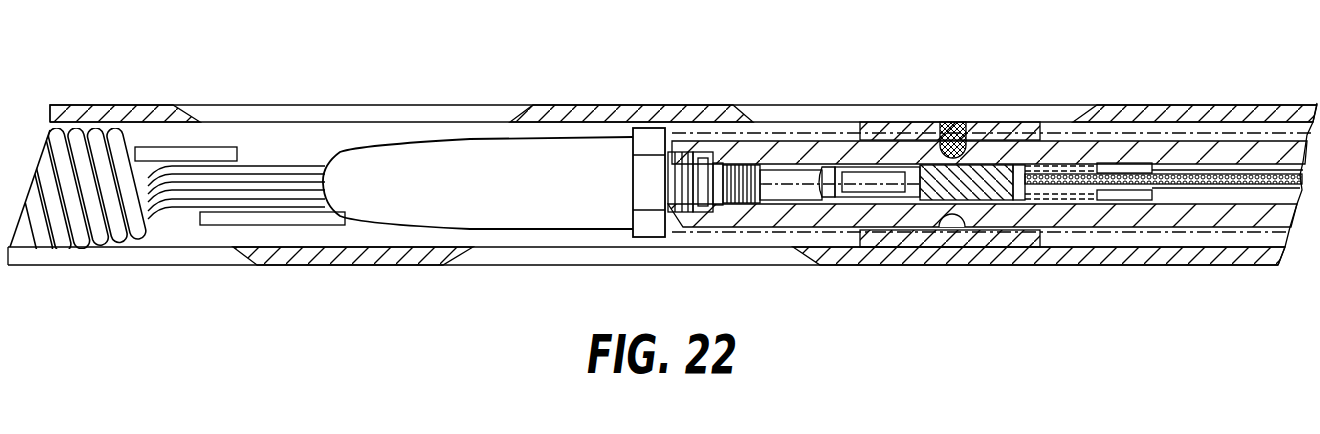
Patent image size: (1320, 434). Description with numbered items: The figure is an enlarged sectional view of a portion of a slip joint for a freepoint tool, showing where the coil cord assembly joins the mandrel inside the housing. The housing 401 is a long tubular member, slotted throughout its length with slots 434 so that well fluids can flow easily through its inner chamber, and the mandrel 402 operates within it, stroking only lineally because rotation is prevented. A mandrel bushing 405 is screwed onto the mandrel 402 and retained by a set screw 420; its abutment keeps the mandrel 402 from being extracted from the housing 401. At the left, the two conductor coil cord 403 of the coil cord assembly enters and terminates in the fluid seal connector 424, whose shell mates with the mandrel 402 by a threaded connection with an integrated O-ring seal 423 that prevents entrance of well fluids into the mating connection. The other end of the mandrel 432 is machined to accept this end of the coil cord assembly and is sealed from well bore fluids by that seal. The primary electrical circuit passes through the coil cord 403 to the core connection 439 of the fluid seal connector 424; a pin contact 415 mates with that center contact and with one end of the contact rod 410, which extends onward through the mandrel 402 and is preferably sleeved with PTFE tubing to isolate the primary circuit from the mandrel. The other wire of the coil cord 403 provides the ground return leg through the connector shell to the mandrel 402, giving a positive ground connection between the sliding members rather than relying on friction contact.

The housing 401 is at (1200, 113).
The mandrel 402 is at (1100, 213).
The two conductor coil cord 403 is at (84, 172).
The mandrel bushing 405 is at (893, 129).
The contact rod 410 is at (1240, 190).
The pin contact 415 is at (1016, 172).
The set screw 420 is at (955, 125).
The O-ring seal 423 is at (690, 156).
The fluid seal connector 424 is at (470, 165).
The other end of the mandrel 432 is at (725, 220).
The slots 434 is at (268, 113).
The core connection 439 is at (853, 180).